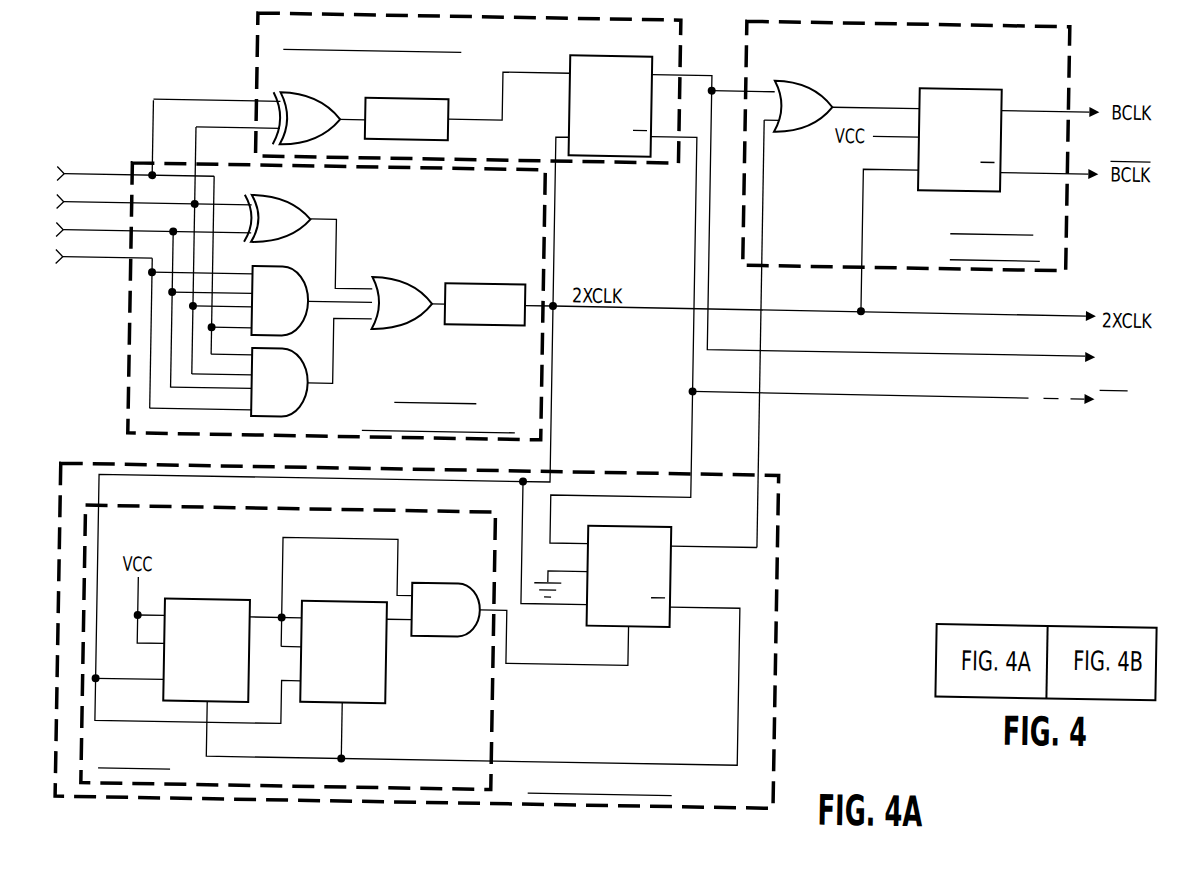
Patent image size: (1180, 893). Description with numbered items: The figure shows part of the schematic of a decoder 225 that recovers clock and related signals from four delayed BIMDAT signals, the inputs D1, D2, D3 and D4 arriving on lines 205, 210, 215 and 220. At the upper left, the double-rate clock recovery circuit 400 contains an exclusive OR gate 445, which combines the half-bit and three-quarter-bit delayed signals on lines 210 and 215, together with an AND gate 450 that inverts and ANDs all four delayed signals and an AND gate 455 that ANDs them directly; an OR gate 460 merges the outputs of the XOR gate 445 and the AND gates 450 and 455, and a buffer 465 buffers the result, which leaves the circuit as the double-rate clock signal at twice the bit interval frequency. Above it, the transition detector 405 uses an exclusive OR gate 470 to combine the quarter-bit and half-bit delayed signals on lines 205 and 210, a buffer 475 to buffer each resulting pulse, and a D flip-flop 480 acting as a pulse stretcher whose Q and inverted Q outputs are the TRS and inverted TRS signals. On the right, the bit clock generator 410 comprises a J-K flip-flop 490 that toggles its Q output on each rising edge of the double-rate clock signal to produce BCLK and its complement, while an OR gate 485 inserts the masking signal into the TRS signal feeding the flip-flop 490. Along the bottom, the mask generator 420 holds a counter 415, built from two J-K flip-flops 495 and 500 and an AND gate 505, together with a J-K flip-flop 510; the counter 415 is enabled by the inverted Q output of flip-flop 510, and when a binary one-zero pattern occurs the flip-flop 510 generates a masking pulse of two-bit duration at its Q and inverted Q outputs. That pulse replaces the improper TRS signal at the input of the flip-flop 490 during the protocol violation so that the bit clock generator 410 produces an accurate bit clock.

The line 205 is at (78, 182).
The line 210 is at (78, 210).
The line 215 is at (78, 238).
The line 220 is at (78, 265).
The decoder 225 is at (848, 478).
The 2X clock recovery circuit 400 is at (543, 420).
The transition detector 405 is at (253, 53).
The bit clock generator 410 is at (1056, 253).
The counter 415 is at (183, 764).
The mask generator 420 is at (680, 776).
The exclusive OR gate 445 is at (293, 215).
The AND gate 450 is at (269, 281).
The AND gate 455 is at (290, 373).
The OR gate 460 is at (412, 294).
The buffer 465 is at (521, 284).
The exclusive OR gate 470 is at (312, 109).
The buffer 475 is at (437, 100).
The D flip-flop 480 is at (560, 58).
The OR gate 485 is at (814, 93).
The J-K flip-flop 490 is at (944, 83).
The flip-flop 495 is at (205, 611).
The flip-flop 500 is at (392, 693).
The AND gate 505 is at (445, 588).
The J-K flip-flop 510 is at (670, 623).